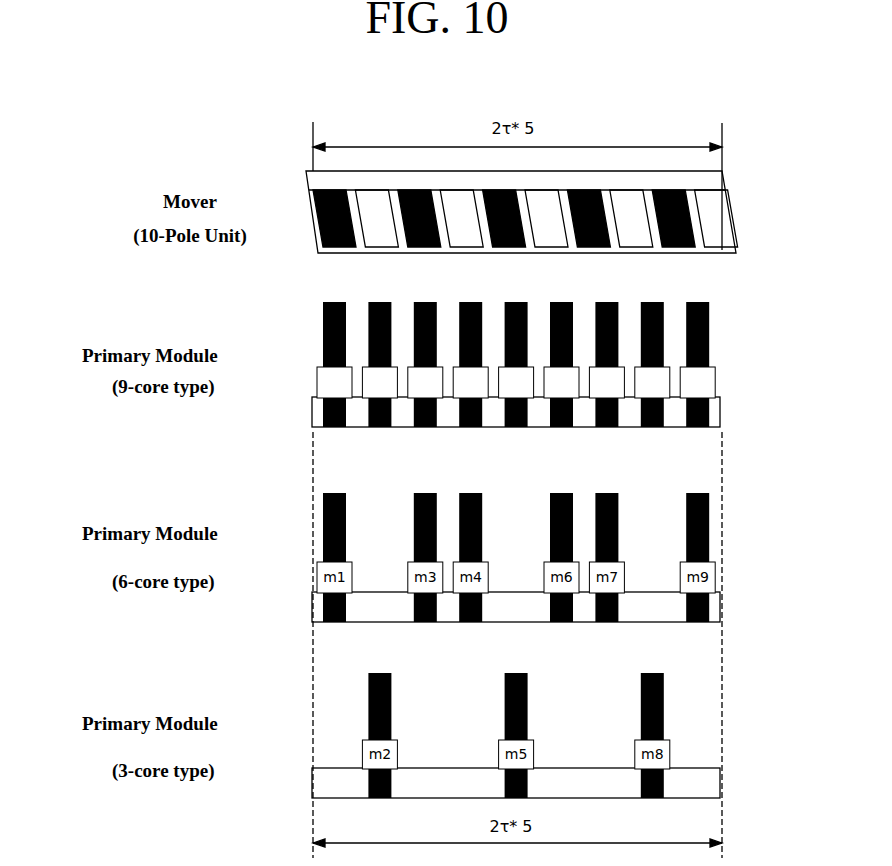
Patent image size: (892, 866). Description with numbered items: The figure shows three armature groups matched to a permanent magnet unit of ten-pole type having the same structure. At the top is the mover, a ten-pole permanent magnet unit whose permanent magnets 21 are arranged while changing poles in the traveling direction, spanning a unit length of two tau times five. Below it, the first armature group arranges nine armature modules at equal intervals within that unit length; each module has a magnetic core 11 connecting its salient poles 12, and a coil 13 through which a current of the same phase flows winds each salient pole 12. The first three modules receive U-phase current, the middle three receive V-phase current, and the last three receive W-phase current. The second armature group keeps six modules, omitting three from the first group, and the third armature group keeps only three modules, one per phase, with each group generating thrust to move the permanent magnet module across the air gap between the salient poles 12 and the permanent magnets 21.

The permanent magnet 21 is at (545, 212).
The magnetic core 11 is at (550, 410).
The salient pole 12 is at (548, 364).
The coil 13 is at (552, 370).